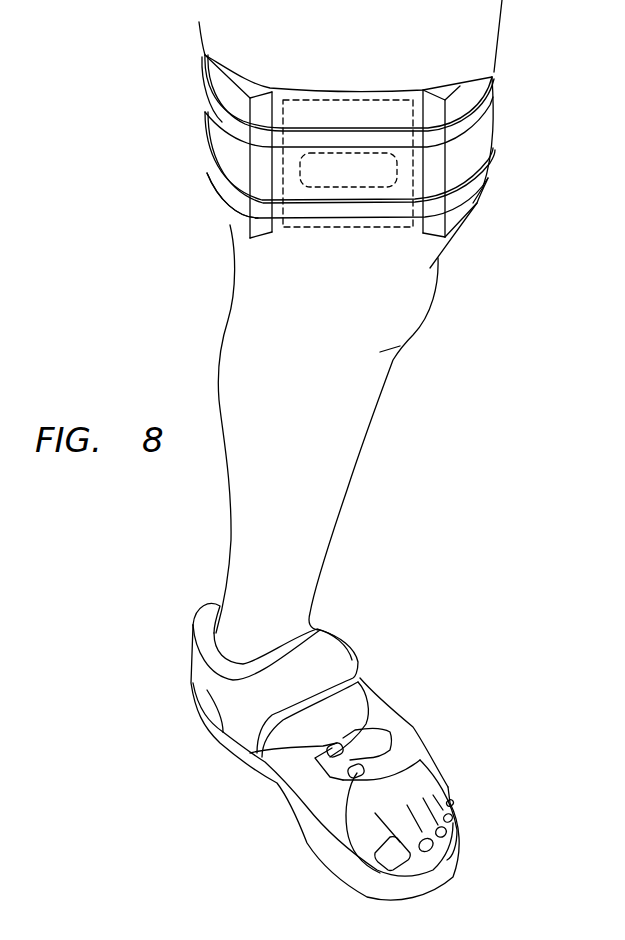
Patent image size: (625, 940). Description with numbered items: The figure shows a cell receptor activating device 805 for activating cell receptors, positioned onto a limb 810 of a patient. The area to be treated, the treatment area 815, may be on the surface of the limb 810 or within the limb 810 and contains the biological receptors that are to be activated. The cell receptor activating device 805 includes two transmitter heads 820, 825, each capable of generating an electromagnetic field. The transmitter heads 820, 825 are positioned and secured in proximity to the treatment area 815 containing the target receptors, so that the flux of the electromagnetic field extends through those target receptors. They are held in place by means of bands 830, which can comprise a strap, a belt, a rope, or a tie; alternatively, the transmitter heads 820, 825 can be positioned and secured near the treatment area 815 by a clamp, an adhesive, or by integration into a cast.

The cell receptor activating device 805 is at (366, 179).
The limb 810 is at (347, 490).
The treatment area 815 is at (333, 188).
The transmitter head 820 is at (475, 203).
The transmitter head 825 is at (218, 202).
The bands 830 is at (203, 91).